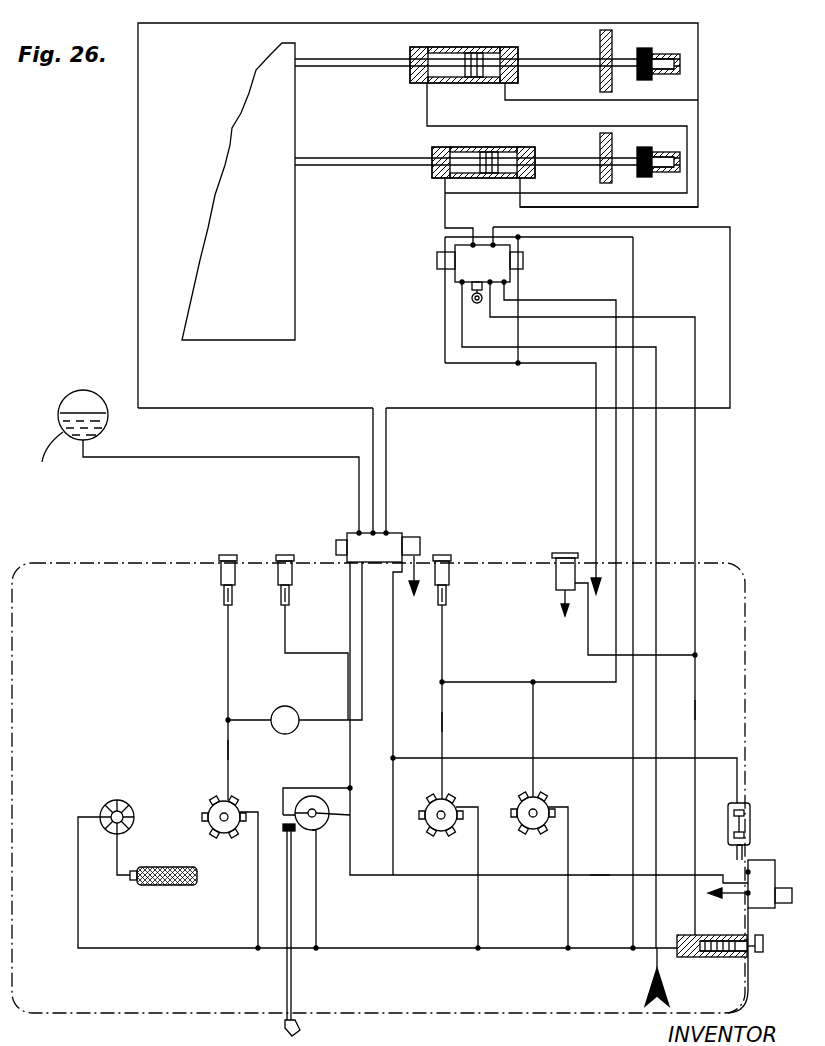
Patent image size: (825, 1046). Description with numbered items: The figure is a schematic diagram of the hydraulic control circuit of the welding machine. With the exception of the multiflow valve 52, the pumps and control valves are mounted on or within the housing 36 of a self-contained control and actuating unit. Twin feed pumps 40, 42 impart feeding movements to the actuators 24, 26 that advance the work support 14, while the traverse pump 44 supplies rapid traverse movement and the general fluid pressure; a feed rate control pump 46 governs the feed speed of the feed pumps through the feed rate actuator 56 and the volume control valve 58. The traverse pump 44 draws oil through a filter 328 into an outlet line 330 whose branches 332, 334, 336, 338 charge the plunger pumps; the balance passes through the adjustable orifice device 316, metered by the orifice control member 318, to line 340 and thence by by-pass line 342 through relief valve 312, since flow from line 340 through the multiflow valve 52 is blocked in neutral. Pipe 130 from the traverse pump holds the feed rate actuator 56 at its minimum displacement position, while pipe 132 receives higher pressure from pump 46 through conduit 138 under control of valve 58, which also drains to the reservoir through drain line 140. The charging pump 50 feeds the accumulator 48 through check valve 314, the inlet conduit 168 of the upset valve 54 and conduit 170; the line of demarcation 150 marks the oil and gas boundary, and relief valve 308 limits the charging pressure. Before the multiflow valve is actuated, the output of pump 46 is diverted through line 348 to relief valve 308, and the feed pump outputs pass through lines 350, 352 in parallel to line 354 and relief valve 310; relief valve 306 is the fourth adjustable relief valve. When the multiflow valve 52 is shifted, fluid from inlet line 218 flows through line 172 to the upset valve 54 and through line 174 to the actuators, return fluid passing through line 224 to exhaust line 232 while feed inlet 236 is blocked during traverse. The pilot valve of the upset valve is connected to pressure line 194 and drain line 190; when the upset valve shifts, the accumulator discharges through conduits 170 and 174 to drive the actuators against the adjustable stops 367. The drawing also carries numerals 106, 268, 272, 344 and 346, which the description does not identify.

The work support 14 is at (280, 237).
The actuator 24 is at (400, 82).
The actuator 26 is at (432, 150).
The housing 36 is at (65, 574).
The feed pump 40 is at (462, 783).
The feed pump 42 is at (523, 800).
The traverse pump 44 is at (105, 806).
The feed rate control pump 46 is at (310, 796).
The accumulator 48 is at (78, 392).
The charging pump 50 is at (210, 806).
The multiflow valve 52 is at (462, 265).
The upset valve 54 is at (348, 540).
The feed rate actuator 56 is at (750, 803).
The volume control valve 58 is at (758, 862).
The drive shaft 106 is at (300, 1030).
The pipe 130 is at (713, 758).
The pipe 132 is at (737, 862).
The conduit 138 is at (600, 875).
The drain line 140 is at (733, 897).
The line of demarcation 150 is at (42, 461).
The inlet conduit 168 is at (362, 612).
The conduit 170 is at (147, 457).
The conduit 172 is at (730, 285).
The conduit 174 is at (698, 72).
The drain line 190 is at (413, 574).
The pressure line 194 is at (393, 668).
The valve inlet line 218 is at (698, 455).
The return line 224 is at (445, 213).
The exhaust line 232 is at (567, 349).
The feed inlet 236 is at (616, 458).
The hydraulic line 268 is at (445, 327).
The hydraulic line 272 is at (575, 238).
The relief valve 306 is at (226, 580).
The relief valve 308 is at (292, 582).
The relief valve 310 is at (450, 578).
The relief valve 312 is at (556, 580).
The check valve 314 is at (283, 706).
The orifice device 316 is at (720, 958).
The orifice control member 318 is at (758, 952).
The filter 328 is at (172, 886).
The outlet line 330 is at (110, 948).
The branch 332 is at (258, 930).
The branch 334 is at (316, 920).
The branch 336 is at (478, 912).
The branch 338 is at (568, 912).
The line 340 is at (695, 712).
The by-pass line 342 is at (588, 636).
The hydraulic line 344 is at (228, 748).
The hydraulic line 346 is at (228, 668).
The line 348 is at (350, 745).
The line 350 is at (442, 722).
The line 352 is at (533, 735).
The line 354 is at (442, 650).
The adjustable fixed stops 367 is at (660, 52).